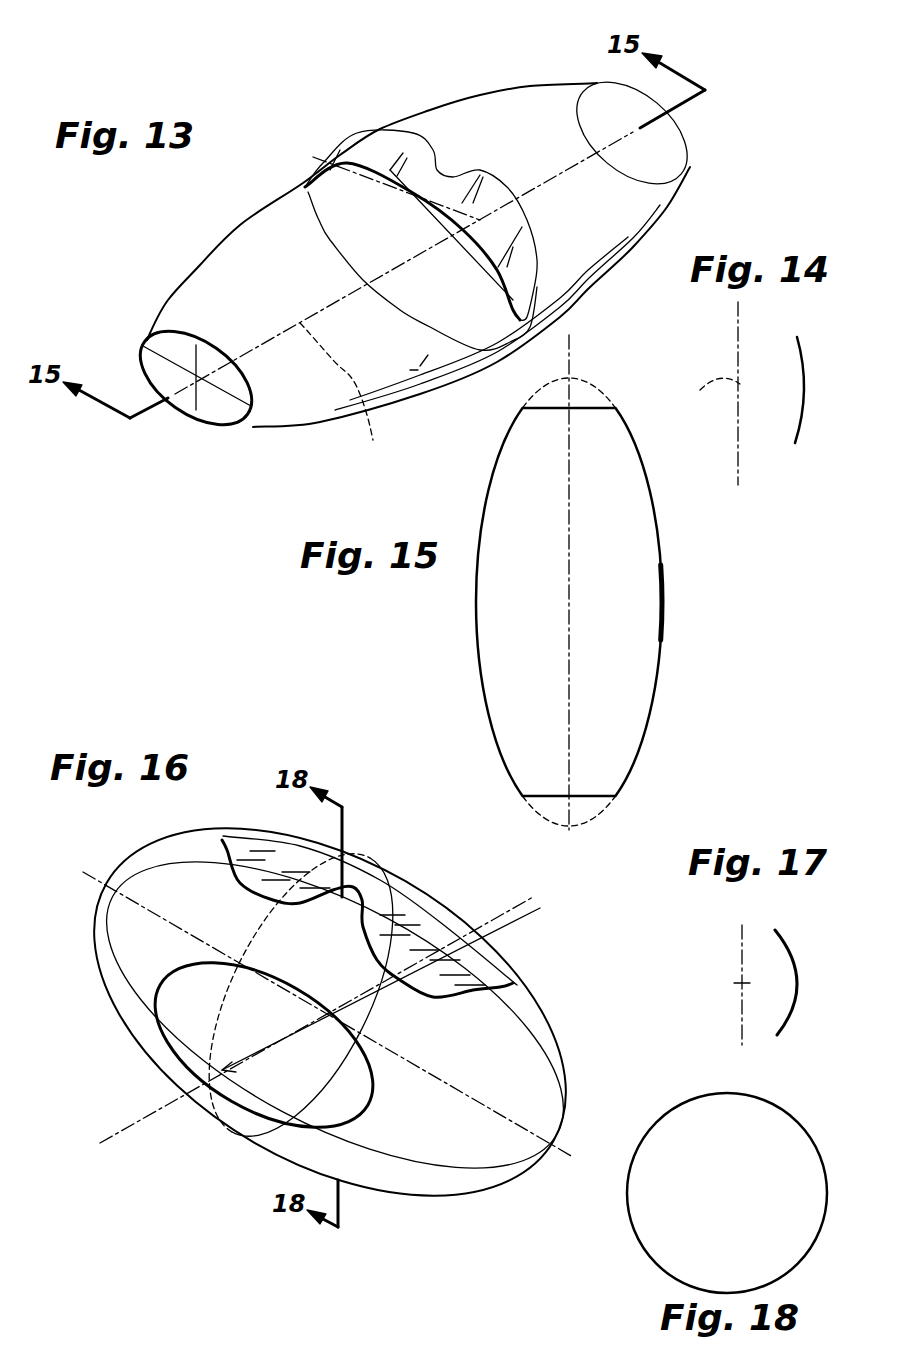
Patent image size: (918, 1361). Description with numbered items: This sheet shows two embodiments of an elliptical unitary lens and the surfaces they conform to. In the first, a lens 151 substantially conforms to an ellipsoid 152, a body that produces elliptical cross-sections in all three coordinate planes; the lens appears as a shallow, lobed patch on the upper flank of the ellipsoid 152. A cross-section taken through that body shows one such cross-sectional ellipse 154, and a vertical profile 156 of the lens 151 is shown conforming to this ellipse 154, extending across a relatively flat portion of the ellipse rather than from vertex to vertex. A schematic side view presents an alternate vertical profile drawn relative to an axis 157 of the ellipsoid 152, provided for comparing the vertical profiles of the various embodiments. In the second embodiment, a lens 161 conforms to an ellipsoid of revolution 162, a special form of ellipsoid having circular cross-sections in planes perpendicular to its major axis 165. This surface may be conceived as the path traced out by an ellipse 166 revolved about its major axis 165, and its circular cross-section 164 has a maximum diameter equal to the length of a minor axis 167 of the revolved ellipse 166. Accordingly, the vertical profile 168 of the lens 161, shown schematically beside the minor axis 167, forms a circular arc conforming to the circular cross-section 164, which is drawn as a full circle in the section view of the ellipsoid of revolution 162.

In FIG. 13, the lens 151 is at (374, 140).
In FIG. 14, the lens 151 is at (799, 347).
In FIG. 15, the lens 151 is at (662, 585).
In FIG. 13, the ellipsoid 152 is at (678, 143).
In FIG. 15, the ellipsoid 152 is at (655, 512).
In FIG. 15, the cross-sectional ellipse 154 is at (600, 390).
In FIG. 14, the vertical profile 156 is at (803, 385).
In FIG. 13, the axis 157 is at (352, 399).
In FIG. 14, the axis 157 is at (701, 400).
In FIG. 16, the lens 161 is at (257, 840).
In FIG. 17, the lens 161 is at (823, 917).
In FIG. 16, the ellipsoid of revolution 162 is at (522, 983).
In FIG. 18, the ellipsoid of revolution 162 is at (757, 1096).
In FIG. 16, the cross-section 164 is at (264, 1045).
In FIG. 18, the cross-section 164 is at (785, 1108).
In FIG. 16, the major axis 165 is at (553, 1150).
In FIG. 16, the ellipse 166 is at (477, 1143).
In FIG. 16, the minor axis 167 is at (493, 917).
In FIG. 17, the minor axis 167 is at (740, 951).
In FIG. 17, the vertical profile 168 is at (797, 993).